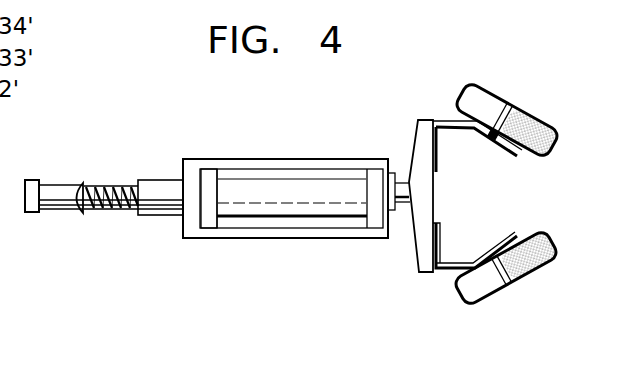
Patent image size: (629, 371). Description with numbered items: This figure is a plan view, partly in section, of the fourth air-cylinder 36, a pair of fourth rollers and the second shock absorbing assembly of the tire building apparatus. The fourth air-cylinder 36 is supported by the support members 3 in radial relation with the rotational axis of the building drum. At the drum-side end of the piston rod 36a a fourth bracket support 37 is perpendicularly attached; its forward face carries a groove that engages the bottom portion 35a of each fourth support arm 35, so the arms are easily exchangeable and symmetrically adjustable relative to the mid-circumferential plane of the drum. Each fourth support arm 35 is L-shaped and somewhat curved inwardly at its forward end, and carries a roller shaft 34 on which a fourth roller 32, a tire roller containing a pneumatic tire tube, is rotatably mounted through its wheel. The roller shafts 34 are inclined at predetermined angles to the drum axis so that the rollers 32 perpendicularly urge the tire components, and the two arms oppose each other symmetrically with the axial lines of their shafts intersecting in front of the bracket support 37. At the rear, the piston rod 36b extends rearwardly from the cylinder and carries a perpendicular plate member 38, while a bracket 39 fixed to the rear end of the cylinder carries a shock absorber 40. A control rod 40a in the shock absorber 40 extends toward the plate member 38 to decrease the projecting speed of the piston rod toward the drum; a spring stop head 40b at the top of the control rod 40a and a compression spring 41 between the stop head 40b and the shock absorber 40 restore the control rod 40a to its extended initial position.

The support member 3 is at (248, 233).
The fourth roller 32 is at (513, 278).
The roller shaft 34 is at (496, 260).
The fourth support arm 35 is at (448, 270).
The bottom portion of fourth support arm 35a is at (466, 240).
The fourth air-cylinder 36 is at (305, 218).
The piston rod 36a is at (403, 212).
The piston rod 36b is at (50, 212).
The fourth bracket support 37 is at (418, 138).
The plate member 38 is at (30, 182).
The bracket 39 is at (190, 220).
The shock absorber 40 is at (162, 190).
The control rod 40a is at (135, 211).
The spring stop head 40b is at (76, 186).
The compression spring 41 is at (101, 207).